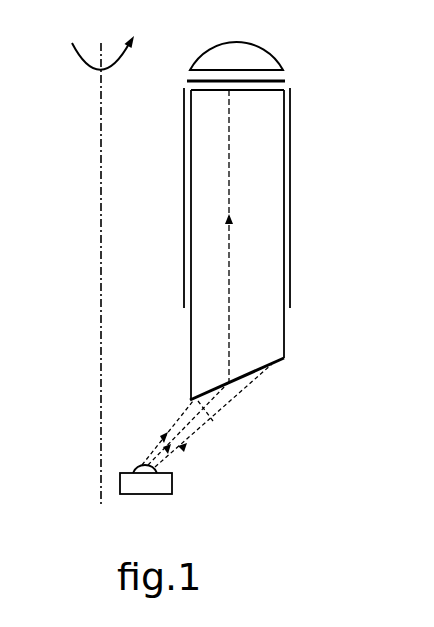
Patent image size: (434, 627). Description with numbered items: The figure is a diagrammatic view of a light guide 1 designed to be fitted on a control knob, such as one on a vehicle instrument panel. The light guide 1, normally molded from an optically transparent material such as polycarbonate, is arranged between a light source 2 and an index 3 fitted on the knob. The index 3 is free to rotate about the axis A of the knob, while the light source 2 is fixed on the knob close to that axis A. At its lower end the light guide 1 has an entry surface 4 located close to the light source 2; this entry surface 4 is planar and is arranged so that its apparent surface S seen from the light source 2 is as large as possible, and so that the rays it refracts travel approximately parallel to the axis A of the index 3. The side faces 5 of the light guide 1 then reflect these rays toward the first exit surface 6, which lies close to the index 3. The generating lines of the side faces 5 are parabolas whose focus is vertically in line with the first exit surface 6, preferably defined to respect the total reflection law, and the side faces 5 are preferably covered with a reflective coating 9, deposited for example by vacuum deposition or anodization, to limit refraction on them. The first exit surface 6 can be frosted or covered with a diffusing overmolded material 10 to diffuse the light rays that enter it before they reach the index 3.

The light guide 1 is at (313, 187).
The light source 2 is at (172, 480).
The index 3 is at (250, 44).
The entry surface 4 is at (253, 375).
The side faces 5 is at (191, 170).
The first exit surface 6 is at (248, 90).
The reflective coating 9 is at (183, 212).
The diffusing overmolded material 10 is at (265, 80).
The axis A is at (102, 292).
The apparent surface S is at (197, 402).